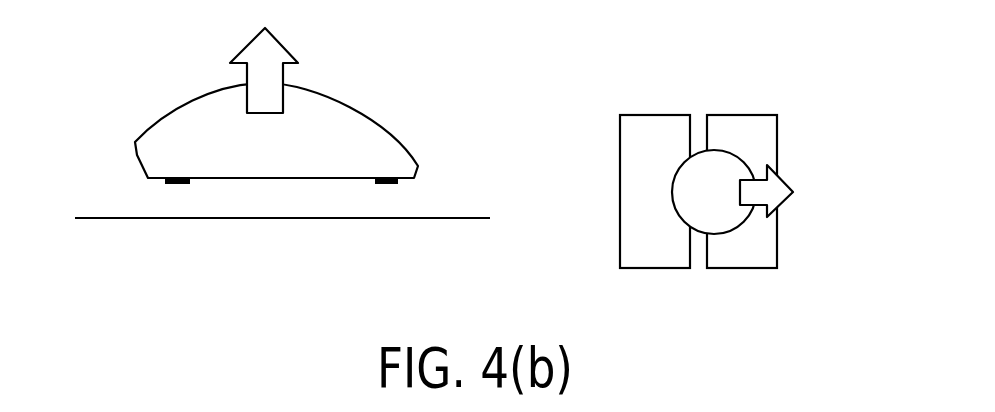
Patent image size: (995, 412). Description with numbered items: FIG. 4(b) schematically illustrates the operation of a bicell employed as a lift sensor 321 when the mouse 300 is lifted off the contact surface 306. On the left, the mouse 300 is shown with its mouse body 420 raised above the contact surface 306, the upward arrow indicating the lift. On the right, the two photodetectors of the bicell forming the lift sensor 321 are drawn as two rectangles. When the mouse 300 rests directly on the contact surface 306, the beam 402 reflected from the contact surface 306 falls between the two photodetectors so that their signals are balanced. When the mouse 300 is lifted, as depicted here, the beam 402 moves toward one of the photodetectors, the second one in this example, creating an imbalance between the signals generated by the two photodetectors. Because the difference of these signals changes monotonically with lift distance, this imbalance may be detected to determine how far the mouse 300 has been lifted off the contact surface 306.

The mouse 300 is at (145, 92).
The contact surface 306 is at (106, 217).
The mouse body 420 is at (353, 135).
The lift sensor 321 is at (828, 150).
The beam 402 is at (720, 217).